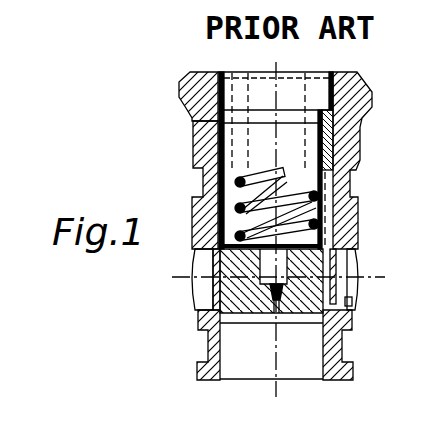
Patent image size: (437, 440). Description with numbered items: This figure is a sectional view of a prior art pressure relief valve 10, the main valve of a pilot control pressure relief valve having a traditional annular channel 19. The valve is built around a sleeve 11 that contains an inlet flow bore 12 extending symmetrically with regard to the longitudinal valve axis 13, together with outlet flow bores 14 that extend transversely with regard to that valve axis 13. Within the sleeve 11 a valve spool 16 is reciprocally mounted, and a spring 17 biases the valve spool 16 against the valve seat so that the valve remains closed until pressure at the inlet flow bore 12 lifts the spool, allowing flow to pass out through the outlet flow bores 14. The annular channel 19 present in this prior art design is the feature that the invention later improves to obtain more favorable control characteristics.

The pressure relief valve 10 is at (148, 153).
The sleeve 11 is at (349, 227).
The inlet flow bore 12 is at (206, 347).
The valve axis 13 is at (352, 345).
The outlet flow bores 14 is at (352, 308).
The valve spool 16 is at (359, 268).
The spring 17 is at (357, 214).
The annular channel 19 is at (352, 300).